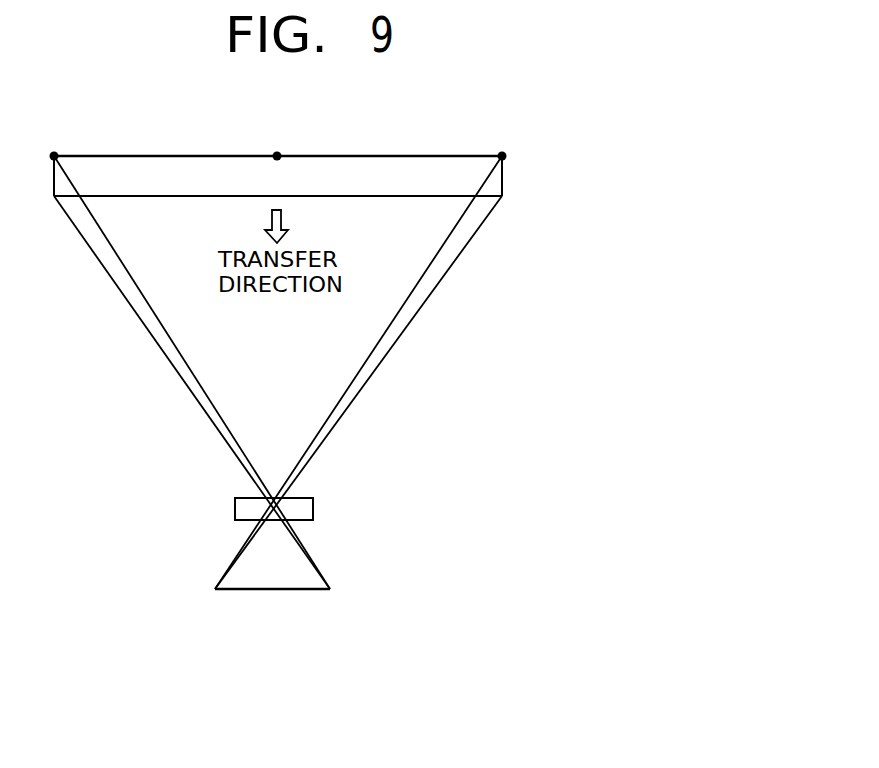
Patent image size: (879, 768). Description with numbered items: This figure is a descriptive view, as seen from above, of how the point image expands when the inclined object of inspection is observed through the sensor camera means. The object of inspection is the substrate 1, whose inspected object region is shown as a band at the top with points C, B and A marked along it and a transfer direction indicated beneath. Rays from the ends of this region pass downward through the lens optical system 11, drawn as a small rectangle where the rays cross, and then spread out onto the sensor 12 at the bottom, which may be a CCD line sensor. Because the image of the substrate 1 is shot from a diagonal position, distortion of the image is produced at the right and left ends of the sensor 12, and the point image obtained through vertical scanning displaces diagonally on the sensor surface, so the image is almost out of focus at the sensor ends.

The substrate 1 is at (398, 168).
The lens optical system 11 is at (248, 508).
The sensor 12 is at (240, 591).